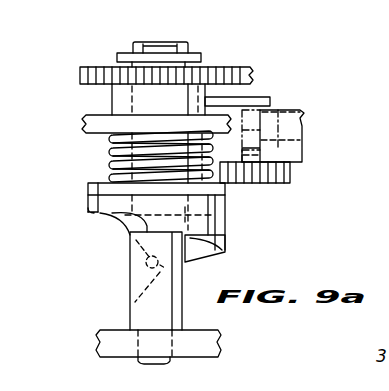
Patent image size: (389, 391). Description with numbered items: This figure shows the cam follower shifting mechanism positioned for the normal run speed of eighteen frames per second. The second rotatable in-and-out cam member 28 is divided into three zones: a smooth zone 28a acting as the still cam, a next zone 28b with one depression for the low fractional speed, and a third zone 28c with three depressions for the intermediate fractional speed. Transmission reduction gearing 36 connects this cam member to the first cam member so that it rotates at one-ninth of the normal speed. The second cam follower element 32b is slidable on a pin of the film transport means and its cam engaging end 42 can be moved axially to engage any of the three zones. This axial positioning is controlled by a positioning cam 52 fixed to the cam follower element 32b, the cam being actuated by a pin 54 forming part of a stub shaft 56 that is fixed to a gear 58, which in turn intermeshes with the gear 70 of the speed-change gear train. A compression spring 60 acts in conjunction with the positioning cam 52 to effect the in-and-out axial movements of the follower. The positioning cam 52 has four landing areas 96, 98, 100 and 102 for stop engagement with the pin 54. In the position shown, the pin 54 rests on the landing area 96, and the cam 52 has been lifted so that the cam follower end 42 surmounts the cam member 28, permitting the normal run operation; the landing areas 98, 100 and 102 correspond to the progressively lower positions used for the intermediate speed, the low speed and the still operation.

The gear 58 is at (212, 62).
The gear 70 is at (256, 59).
The second cam follower element 32b is at (249, 98).
The cam engaging end 42 is at (268, 113).
The second rotatable in-and-out cam member 28 is at (314, 123).
The third zone 28c is at (283, 112).
The next zone 28b is at (272, 142).
The zone acting as the still cam 28a is at (246, 155).
The transmission reduction gearing 36 is at (280, 178).
The compression spring 60 is at (110, 157).
The positioning cam 52 is at (218, 220).
The landing area 102 is at (94, 206).
The landing area 100 is at (145, 226).
The landing area 98 is at (220, 242).
The landing area 96 is at (133, 260).
The pin 54 is at (134, 300).
The stub shaft 56 is at (136, 318).